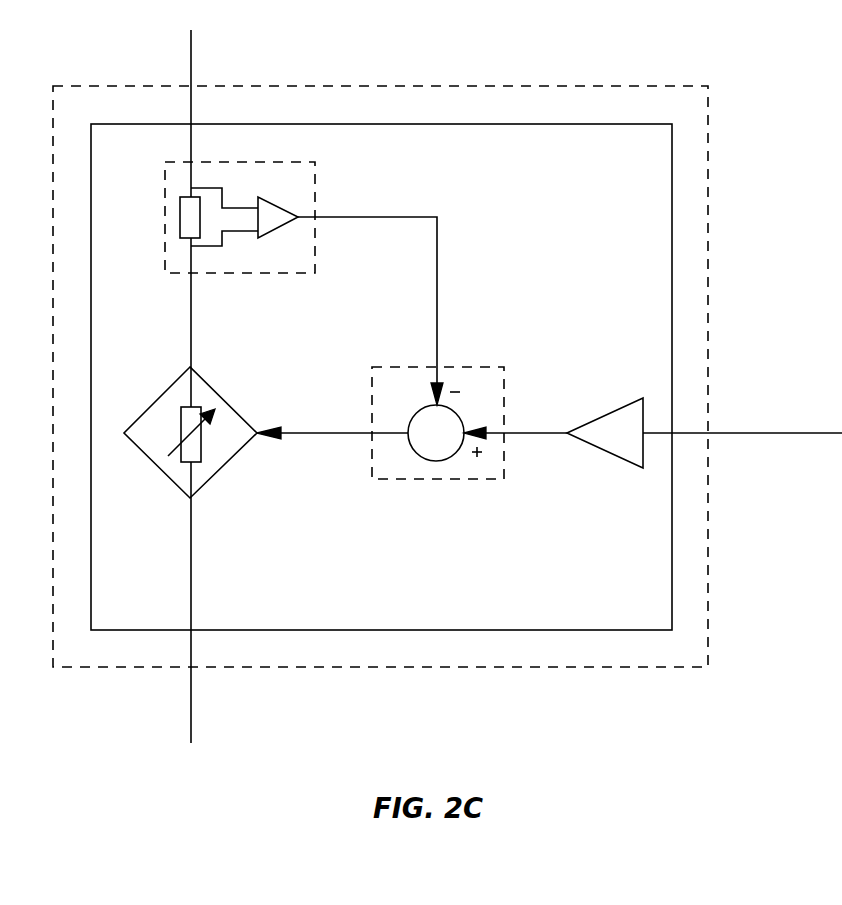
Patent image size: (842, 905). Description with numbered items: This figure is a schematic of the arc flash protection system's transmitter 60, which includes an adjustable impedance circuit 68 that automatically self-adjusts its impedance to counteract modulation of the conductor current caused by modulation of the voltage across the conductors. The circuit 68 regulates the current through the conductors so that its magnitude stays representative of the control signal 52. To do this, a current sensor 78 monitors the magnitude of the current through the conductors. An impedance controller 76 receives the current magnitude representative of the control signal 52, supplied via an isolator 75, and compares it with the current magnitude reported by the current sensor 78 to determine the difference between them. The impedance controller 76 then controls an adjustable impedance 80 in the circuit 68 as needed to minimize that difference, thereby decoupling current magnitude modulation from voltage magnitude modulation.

The control signal 52 is at (765, 434).
The transmitter 60 is at (710, 198).
The adjustable impedance circuit 68 is at (400, 622).
The isolator 75 is at (622, 407).
The impedance controller 76 is at (458, 480).
The current sensor 78 is at (315, 190).
The adjustable impedance 80 is at (218, 473).